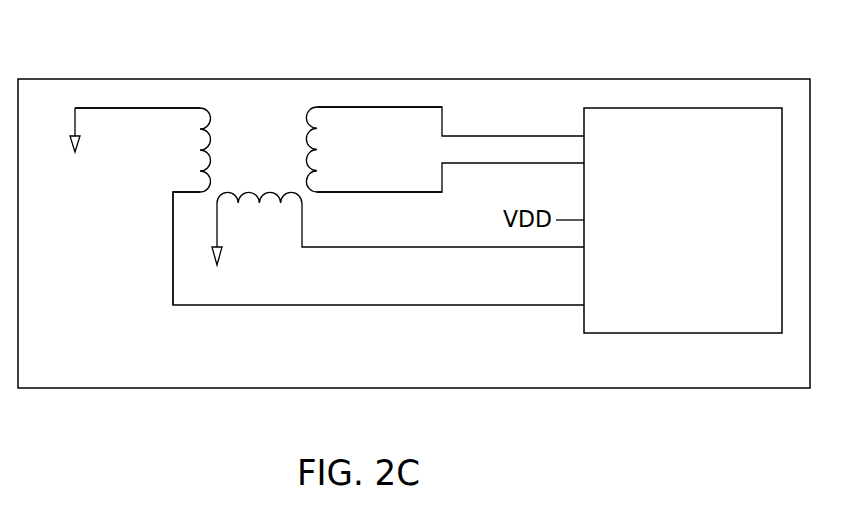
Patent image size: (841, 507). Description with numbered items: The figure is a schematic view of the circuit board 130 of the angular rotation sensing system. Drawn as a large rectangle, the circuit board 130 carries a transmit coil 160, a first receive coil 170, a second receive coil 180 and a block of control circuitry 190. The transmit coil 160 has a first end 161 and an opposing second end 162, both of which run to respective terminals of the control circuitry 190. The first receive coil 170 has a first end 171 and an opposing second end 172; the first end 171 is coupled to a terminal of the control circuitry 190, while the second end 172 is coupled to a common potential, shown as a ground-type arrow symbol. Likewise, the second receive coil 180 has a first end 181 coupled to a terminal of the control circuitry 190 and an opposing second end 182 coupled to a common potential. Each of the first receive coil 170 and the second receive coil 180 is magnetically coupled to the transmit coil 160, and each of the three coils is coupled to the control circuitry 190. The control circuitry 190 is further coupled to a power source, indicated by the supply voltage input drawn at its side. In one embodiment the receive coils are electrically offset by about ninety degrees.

The circuit board 130 is at (556, 389).
The transmit coil 160 is at (318, 122).
The first end of transmit coil 161 is at (318, 107).
The second end of transmit coil 162 is at (330, 193).
The first receive coil 170 is at (195, 118).
The first end of first receive coil 171 is at (190, 193).
The second end of first receive coil 172 is at (173, 107).
The second receive coil 180 is at (240, 207).
The first end of second receive coil 181 is at (298, 207).
The second end of second receive coil 182 is at (217, 206).
The control circuitry 190 is at (670, 334).